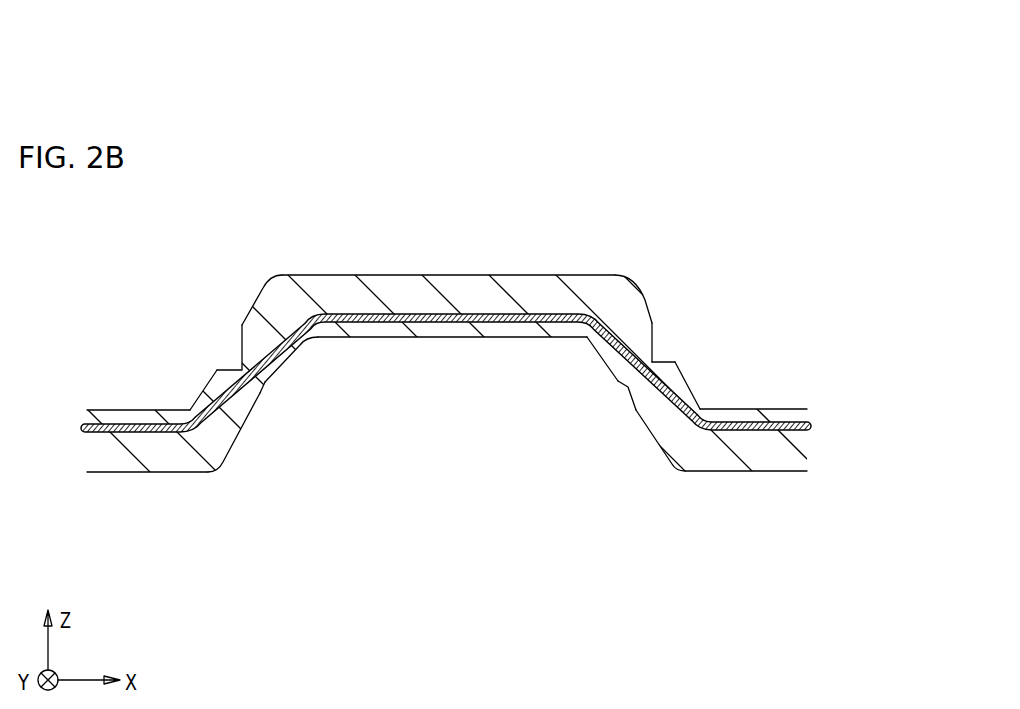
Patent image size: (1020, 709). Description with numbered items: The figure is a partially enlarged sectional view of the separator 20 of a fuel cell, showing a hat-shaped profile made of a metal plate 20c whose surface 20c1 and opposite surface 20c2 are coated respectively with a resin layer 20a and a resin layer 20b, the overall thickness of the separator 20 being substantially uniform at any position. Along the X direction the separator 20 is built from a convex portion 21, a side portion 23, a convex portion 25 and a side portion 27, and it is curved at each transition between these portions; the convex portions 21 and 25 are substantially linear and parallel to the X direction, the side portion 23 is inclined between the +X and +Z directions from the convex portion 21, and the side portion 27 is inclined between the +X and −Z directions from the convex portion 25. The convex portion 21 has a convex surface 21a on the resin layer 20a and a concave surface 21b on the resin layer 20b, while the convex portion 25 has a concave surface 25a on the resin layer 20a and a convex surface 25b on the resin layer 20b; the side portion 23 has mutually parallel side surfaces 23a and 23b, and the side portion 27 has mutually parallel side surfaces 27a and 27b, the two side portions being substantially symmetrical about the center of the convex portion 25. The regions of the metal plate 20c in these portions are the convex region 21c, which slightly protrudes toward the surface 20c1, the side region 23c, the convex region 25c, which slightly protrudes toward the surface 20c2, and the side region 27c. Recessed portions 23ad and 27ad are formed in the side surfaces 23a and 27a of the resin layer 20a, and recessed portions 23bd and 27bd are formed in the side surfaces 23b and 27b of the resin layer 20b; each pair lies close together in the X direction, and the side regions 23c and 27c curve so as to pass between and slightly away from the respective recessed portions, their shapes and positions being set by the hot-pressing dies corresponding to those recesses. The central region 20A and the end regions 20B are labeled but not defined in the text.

The separator 20 is at (725, 243).
The central region 20A is at (488, 464).
The end region 20B is at (127, 362).
The resin layer 20a is at (828, 449).
The resin layer 20b is at (825, 405).
The metal plate 20c is at (827, 422).
The surface 20c1 is at (762, 433).
The surface 20c2 is at (775, 419).
The convex portion 21 is at (116, 461).
The convex surface 21a is at (158, 473).
The concave surface 21b is at (123, 392).
The convex region 21c is at (86, 428).
The side portion 23 is at (253, 332).
The side surface 23a is at (245, 447).
The side surface 23b is at (207, 386).
The side region 23c is at (295, 354).
The recessed portion 23ad is at (260, 394).
The recessed portion 23bd is at (240, 366).
The convex portion 25 is at (482, 290).
The concave surface 25a is at (442, 338).
The convex surface 25b is at (427, 273).
The convex region 25c is at (365, 313).
The side portion 27 is at (615, 372).
The side surface 27a is at (600, 360).
The side surface 27b is at (693, 390).
The side region 27c is at (620, 336).
The recessed portion 27ad is at (627, 392).
The recessed portion 27bd is at (653, 362).